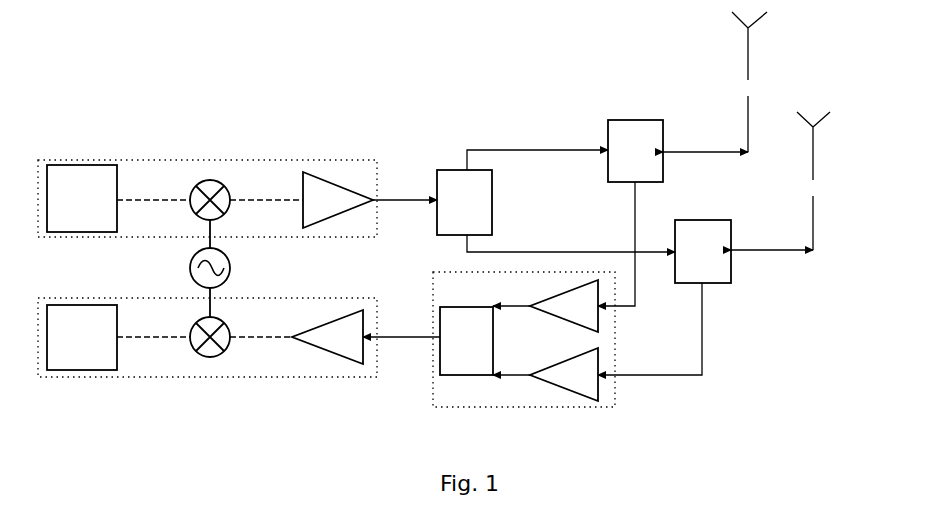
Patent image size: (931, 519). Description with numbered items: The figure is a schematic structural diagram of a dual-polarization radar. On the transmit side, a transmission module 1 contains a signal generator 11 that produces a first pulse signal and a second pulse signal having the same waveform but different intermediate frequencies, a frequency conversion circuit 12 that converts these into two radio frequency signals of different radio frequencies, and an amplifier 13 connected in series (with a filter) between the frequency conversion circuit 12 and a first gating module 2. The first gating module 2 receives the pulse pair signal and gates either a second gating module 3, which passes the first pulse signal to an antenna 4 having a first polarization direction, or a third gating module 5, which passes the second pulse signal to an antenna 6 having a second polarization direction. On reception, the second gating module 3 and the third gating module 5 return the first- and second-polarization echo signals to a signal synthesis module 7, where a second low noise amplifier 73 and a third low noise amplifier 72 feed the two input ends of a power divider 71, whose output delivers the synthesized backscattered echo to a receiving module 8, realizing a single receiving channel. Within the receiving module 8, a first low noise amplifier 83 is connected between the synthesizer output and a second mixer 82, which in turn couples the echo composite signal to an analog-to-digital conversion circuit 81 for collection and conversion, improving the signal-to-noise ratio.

The transmission module 1 is at (135, 166).
The signal generator 11 is at (58, 166).
The frequency conversion circuit 12 is at (223, 173).
The amplifier 13 is at (305, 171).
The first gating module 2 is at (462, 170).
The second gating module 3 is at (628, 121).
The antenna having a first polarization direction 4 is at (742, 30).
The third gating module 5 is at (682, 221).
The antenna having a second polarization direction 6 is at (831, 112).
The signal synthesis module 7 is at (443, 405).
The power divider 71 is at (492, 375).
The third low noise amplifier 72 is at (598, 395).
The second low noise amplifier 73 is at (598, 325).
The receiving module 8 is at (163, 377).
The analog-to-digital conversion circuit 81 is at (70, 370).
The second mixer 82 is at (221, 352).
The first low noise amplifier 83 is at (369, 364).